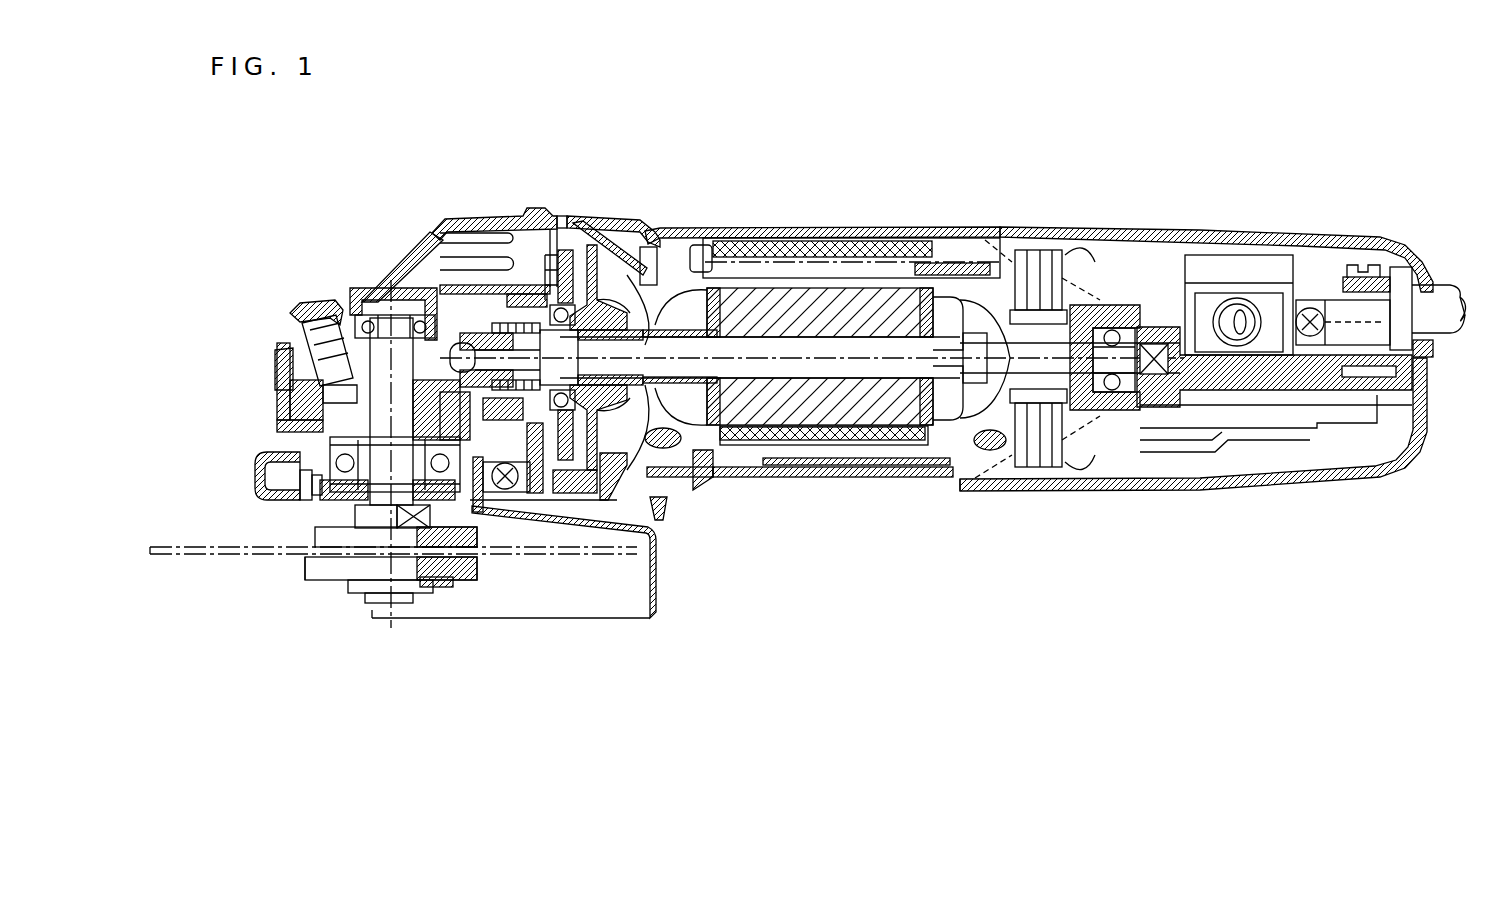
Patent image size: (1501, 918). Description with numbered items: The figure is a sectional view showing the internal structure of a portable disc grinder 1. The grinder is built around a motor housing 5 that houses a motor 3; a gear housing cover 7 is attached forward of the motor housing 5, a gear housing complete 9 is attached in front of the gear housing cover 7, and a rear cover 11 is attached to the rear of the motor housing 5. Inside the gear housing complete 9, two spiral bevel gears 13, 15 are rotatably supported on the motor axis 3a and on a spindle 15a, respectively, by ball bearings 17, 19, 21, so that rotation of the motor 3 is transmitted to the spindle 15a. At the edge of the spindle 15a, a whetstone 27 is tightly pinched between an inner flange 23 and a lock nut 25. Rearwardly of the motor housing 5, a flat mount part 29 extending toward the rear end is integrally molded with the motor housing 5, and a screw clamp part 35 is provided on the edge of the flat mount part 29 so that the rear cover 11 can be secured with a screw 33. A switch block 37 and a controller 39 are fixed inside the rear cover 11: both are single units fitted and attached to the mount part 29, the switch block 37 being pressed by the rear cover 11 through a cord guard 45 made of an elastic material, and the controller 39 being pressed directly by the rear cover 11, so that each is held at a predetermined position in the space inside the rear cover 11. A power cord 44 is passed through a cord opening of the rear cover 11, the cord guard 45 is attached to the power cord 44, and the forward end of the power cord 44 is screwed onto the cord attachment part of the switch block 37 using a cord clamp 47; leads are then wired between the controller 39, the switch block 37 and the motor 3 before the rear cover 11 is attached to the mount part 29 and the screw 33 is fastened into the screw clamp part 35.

The portable disc grinder 1 is at (832, 160).
The motor 3 is at (858, 412).
The motor axis 3a is at (622, 290).
The motor housing 5 is at (865, 228).
The gear housing cover 7 is at (567, 214).
The gear housing complete 9 is at (458, 220).
The rear cover 11 is at (1113, 230).
The spiral bevel gear 13 is at (505, 222).
The spiral bevel gear 15 is at (415, 300).
The spindle 15a is at (372, 600).
The ball bearing 17 is at (565, 338).
The ball bearing 19 is at (366, 320).
The ball bearing 21 is at (322, 493).
The inner flange 23 is at (475, 540).
The lock nut 25 is at (477, 572).
The whetstone 27 is at (190, 558).
The flat mount part 29 is at (1302, 380).
The screw 33 is at (1378, 392).
The screw clamp part 35 is at (1368, 415).
The switch block 37 is at (1240, 268).
The controller 39 is at (1233, 413).
The power cord 44 is at (1457, 300).
The cord guard 45 is at (1405, 268).
The cord clamp 47 is at (1345, 272).